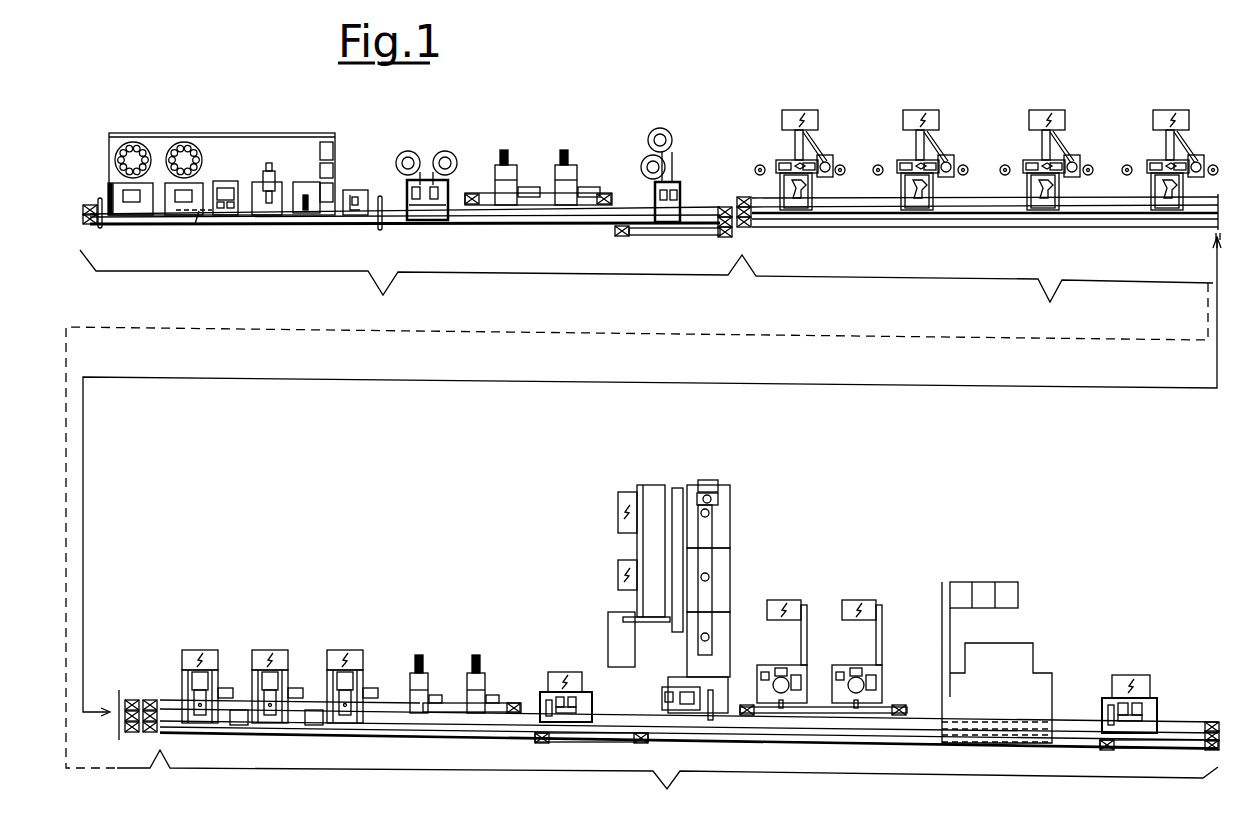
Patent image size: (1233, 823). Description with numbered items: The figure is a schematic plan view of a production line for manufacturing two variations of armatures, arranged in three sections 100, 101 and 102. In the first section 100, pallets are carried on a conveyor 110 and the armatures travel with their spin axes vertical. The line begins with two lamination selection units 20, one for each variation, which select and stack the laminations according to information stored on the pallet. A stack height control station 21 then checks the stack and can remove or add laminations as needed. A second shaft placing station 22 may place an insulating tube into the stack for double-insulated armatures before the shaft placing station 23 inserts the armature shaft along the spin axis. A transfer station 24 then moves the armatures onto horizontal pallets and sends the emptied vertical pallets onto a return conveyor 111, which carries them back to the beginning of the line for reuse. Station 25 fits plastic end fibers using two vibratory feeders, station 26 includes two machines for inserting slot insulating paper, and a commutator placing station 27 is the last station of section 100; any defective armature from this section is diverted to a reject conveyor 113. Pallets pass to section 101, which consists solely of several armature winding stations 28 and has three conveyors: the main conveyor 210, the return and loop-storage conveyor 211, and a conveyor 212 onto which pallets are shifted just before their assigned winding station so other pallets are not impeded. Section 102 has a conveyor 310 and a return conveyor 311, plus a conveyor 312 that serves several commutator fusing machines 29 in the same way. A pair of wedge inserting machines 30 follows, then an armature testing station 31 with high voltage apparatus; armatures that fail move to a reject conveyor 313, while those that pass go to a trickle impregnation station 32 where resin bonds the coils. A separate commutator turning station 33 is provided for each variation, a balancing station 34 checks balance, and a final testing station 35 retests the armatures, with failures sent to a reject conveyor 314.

The lamination selection unit 20 is at (135, 140).
The stack height control station 21 is at (227, 180).
The second shaft placing station 22 is at (260, 182).
The shaft placing station 23 is at (303, 180).
The transfer station 24 is at (357, 190).
The end fiber fitting station 25 is at (452, 150).
The slot insulating station 26 is at (540, 172).
The commutator placing station 27 is at (660, 127).
The armature winding station 28 is at (797, 110).
The commutator fusing machine 29 is at (200, 650).
The wedge inserting machine 30 is at (420, 668).
The armature testing station 31 is at (558, 672).
The trickle impregnation station 32 is at (673, 480).
The commutator turning station 33 is at (780, 600).
The balancing station 34 is at (985, 582).
The final testing station 35 is at (1127, 675).
The first section 100 is at (415, 301).
The second section 101 is at (1083, 314).
The third section 102 is at (705, 791).
The conveyor 110 is at (702, 205).
The return conveyor 111 is at (525, 222).
The reject conveyor 113 is at (660, 228).
The conveyor 210 is at (840, 213).
The conveyor 211 is at (782, 222).
The conveyor 212 is at (857, 198).
The conveyor 310 is at (410, 715).
The conveyor 311 is at (375, 725).
The conveyor 312 is at (388, 703).
The reject conveyor 313 is at (567, 742).
The reject conveyor 314 is at (1137, 743).